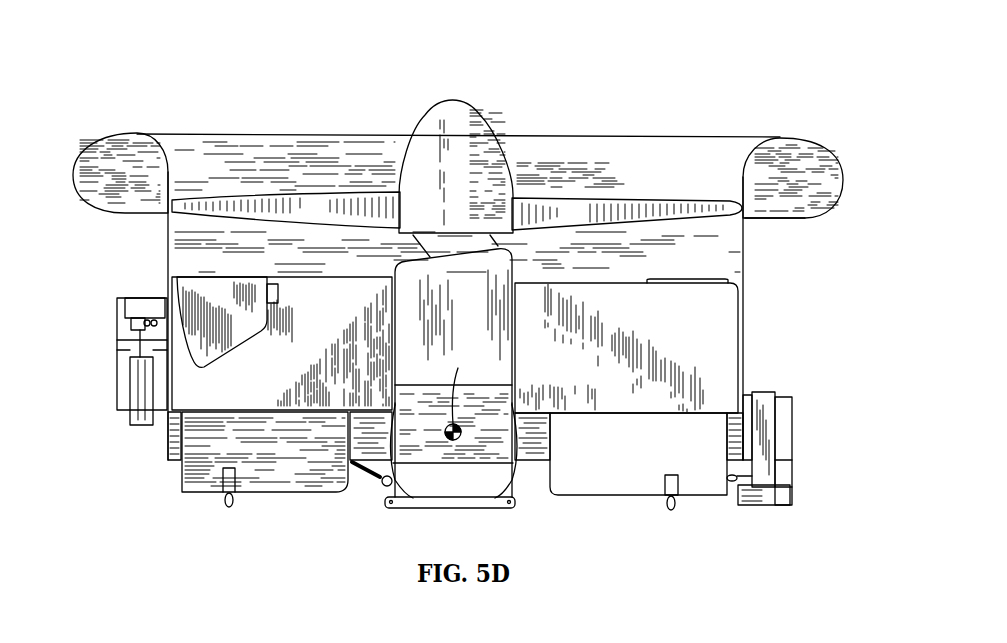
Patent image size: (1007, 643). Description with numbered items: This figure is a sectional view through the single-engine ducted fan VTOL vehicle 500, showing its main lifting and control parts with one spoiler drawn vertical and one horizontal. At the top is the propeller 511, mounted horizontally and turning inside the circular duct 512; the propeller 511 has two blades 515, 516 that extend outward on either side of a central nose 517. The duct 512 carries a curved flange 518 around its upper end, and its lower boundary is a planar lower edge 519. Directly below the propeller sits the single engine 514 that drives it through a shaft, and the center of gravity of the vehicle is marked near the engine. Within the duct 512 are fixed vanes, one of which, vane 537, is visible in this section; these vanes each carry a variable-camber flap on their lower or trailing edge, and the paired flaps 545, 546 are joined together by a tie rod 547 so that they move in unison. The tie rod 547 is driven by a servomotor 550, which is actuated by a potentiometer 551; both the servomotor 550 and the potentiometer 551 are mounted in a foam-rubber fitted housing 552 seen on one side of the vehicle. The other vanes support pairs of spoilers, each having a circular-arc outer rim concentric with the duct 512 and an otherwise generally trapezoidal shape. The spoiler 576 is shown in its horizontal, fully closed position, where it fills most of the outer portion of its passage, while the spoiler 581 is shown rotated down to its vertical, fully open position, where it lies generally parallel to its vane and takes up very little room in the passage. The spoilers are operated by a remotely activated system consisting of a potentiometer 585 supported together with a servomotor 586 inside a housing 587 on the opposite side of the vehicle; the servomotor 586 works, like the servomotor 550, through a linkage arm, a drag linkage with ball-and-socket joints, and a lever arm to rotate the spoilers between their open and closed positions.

The single-engine ducted fan VTOL vehicle 500 is at (768, 52).
The propeller 511 is at (388, 160).
The duct 512 is at (185, 152).
The engine 514 is at (507, 277).
The blade 515 is at (260, 143).
The blade 516 is at (632, 202).
The nose 517 is at (452, 113).
The curved flange 518 is at (813, 138).
The planar lower edge 519 is at (772, 222).
The fixed vane 537 is at (652, 466).
The variable-camber flap 545 is at (495, 508).
The variable-camber flap 546 is at (413, 507).
The tie rod 547 is at (432, 510).
The servomotor 550 is at (763, 392).
The potentiometer 551 is at (760, 507).
The housing 552 is at (793, 442).
The spoiler 576 is at (697, 277).
The spoiler 581 is at (240, 335).
The potentiometer 585 is at (142, 298).
The servomotor 586 is at (146, 427).
The housing 587 is at (117, 390).